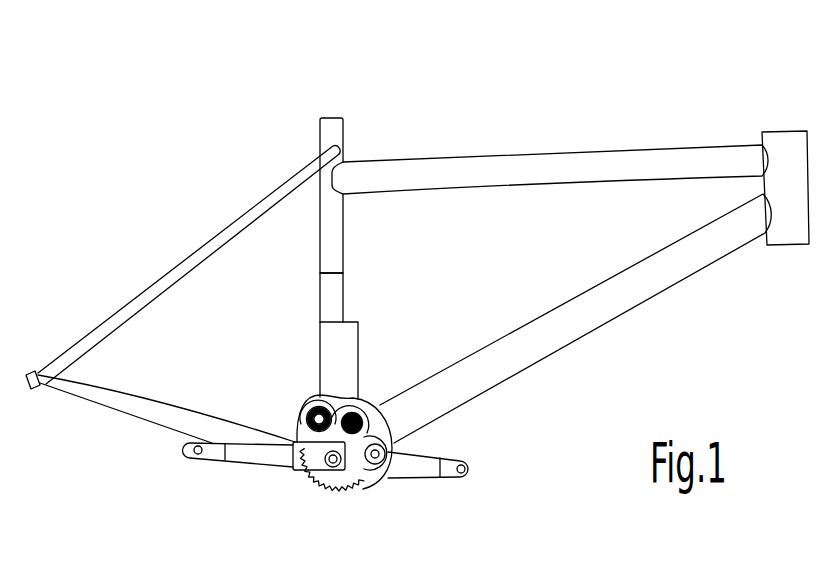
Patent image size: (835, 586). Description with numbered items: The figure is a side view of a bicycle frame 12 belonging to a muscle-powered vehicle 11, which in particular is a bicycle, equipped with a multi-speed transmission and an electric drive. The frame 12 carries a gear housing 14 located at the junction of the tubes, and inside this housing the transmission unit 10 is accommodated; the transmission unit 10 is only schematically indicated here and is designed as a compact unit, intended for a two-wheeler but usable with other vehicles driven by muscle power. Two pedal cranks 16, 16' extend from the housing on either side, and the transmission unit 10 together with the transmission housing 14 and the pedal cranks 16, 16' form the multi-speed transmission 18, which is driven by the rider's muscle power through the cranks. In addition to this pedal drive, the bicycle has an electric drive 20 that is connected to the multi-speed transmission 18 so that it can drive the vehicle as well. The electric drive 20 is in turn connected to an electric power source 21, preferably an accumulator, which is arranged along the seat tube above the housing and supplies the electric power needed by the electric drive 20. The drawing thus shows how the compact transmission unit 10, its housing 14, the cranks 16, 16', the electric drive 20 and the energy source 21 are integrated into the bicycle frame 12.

The transmission unit 10 is at (282, 397).
The muscle-powered vehicle 11 is at (238, 157).
The bicycle frame 12 is at (540, 170).
The gear housing 14 is at (362, 396).
The pedal crank 16 is at (238, 494).
The pedal crank 16' is at (480, 500).
The multi-speed transmission 18 is at (380, 491).
The electric drive 20 is at (342, 340).
The electric power source 21 is at (327, 296).